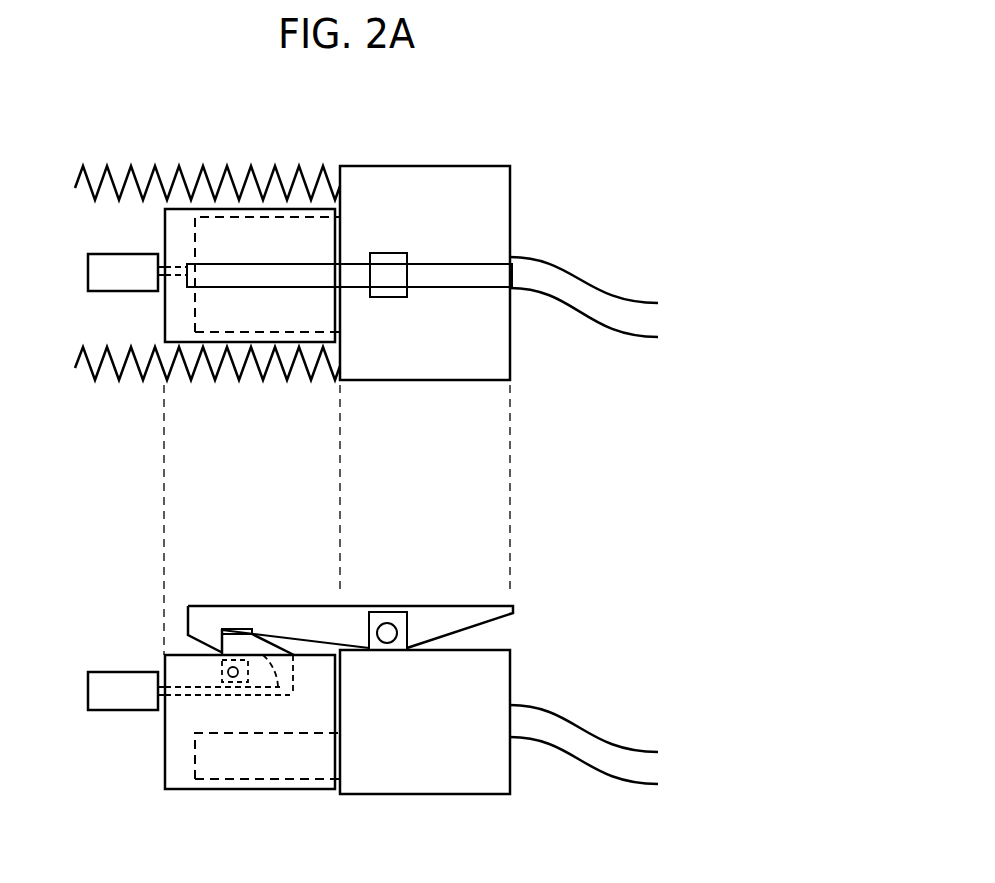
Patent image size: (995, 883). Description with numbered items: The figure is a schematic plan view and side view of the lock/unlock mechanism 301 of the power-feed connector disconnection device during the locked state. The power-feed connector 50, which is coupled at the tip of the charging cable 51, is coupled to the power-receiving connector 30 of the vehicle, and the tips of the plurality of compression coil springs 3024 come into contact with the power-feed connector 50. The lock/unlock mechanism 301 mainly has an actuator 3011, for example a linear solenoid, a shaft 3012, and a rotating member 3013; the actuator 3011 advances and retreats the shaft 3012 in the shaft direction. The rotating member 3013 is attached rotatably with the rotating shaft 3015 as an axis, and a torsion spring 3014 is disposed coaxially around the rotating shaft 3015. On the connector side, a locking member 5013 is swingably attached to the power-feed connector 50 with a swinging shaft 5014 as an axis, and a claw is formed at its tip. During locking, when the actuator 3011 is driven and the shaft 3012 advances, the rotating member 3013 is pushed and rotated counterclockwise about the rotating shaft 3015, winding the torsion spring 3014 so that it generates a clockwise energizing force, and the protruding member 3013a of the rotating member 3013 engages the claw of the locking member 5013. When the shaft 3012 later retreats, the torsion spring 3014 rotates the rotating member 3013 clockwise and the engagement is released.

The lock/unlock mechanism 301 is at (122, 120).
The compression coil springs 3024 is at (238, 168).
The power-receiving connector 30 is at (165, 310).
The actuator 3011 is at (105, 256).
The shaft 3012 is at (188, 685).
The rotating member 3013 is at (278, 652).
The protruding member 3013a is at (223, 627).
The torsion spring 3014 is at (237, 662).
The rotating shaft 3015 is at (248, 662).
The power-feed connector 50 is at (505, 225).
The locking member 5013 is at (458, 268).
The swinging shaft 5014 is at (390, 625).
The charging cable 51 is at (615, 298).